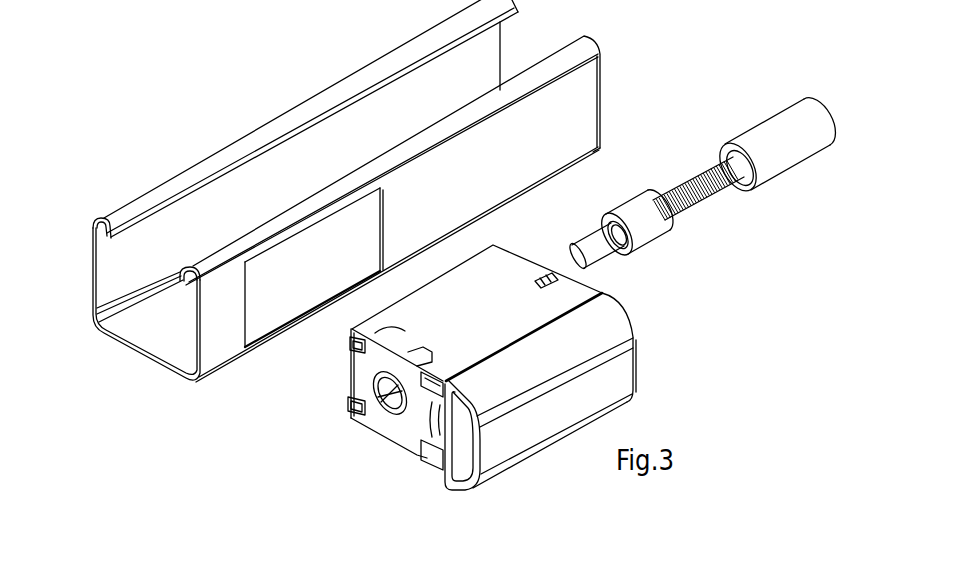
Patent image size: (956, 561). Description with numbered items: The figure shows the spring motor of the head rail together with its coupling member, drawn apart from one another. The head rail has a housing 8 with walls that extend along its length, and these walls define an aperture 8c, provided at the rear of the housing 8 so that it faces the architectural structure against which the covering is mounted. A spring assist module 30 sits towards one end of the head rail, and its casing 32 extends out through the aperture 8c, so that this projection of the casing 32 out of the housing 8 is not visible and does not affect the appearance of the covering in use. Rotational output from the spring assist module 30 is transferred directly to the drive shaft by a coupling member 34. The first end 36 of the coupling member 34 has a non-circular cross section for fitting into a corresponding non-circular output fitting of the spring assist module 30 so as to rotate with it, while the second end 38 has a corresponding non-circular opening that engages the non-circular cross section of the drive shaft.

The housing 8 is at (346, 192).
The aperture 8c is at (285, 300).
The spring assist module 30 is at (458, 367).
The casing 32 is at (357, 341).
The coupling member 34 is at (698, 202).
The first end 36 is at (596, 256).
The second end 38 is at (790, 142).